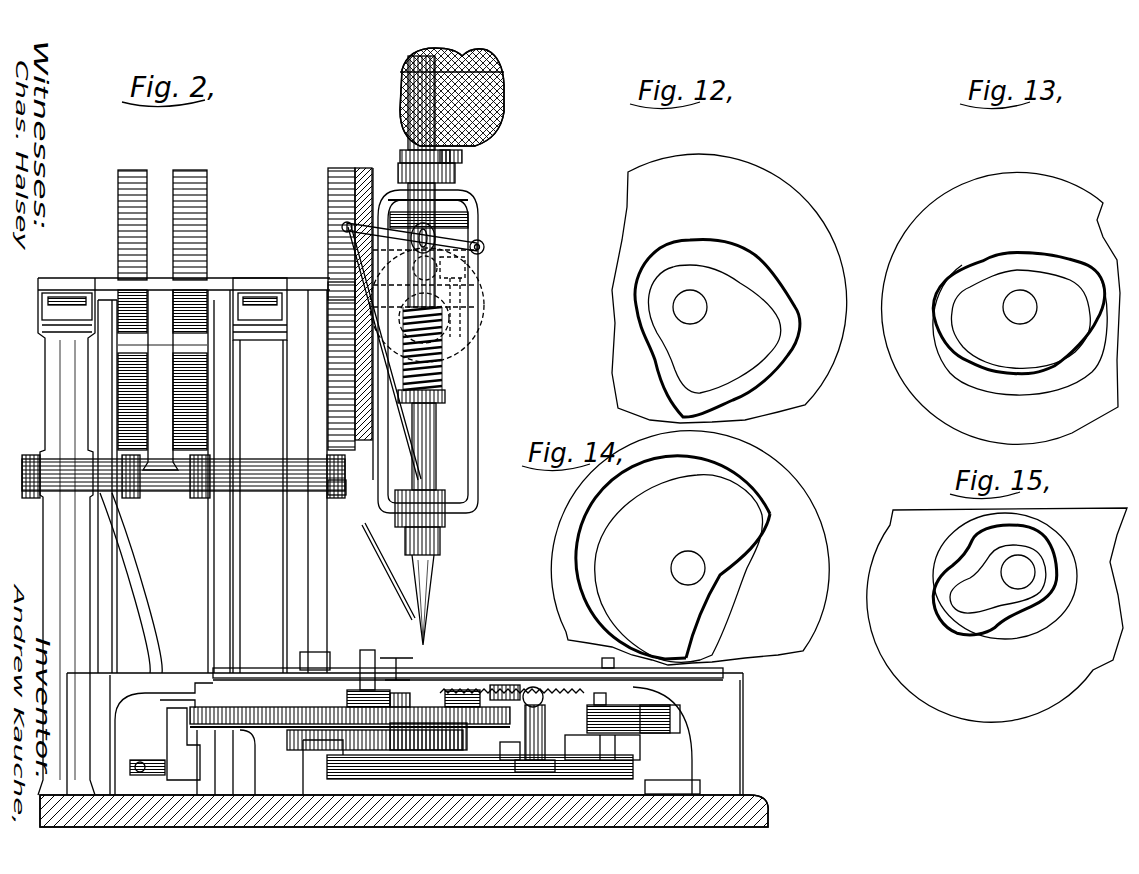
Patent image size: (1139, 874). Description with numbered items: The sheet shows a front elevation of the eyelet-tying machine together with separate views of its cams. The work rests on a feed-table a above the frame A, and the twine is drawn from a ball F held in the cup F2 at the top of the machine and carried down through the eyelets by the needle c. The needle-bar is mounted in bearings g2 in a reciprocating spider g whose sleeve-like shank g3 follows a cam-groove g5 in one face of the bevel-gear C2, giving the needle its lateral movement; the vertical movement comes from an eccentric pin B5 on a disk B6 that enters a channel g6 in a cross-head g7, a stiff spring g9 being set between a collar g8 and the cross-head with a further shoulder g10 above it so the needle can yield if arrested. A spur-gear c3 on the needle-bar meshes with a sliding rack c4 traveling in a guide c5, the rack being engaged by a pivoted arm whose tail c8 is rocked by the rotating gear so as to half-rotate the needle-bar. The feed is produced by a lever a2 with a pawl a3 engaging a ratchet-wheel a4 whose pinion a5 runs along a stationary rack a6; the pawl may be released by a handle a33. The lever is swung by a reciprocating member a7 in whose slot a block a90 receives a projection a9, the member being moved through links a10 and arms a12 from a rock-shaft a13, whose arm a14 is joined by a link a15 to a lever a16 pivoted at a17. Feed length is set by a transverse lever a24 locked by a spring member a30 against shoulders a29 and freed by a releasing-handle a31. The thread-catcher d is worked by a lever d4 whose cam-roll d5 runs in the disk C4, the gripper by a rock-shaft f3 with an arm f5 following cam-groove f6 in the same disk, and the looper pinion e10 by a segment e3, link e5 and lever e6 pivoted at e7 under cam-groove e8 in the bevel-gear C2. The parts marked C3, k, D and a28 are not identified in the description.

In FIG. 2, the frame A is at (767, 805).
In FIG. 2, the thread-catcher d is at (40, 298).
In FIG. 2, the cam C3 is at (133, 176).
In FIG. 2, the disk C4 is at (200, 176).
In FIG. 14, the disk C4 is at (690, 548).
In FIG. 15, the disk C4 is at (997, 615).
In FIG. 2, the bevel-gear C2 is at (374, 200).
In FIG. 12, the bevel-gear C2 is at (729, 288).
In FIG. 13, the bevel-gear C2 is at (1001, 308).
In FIG. 2, the upwardly-projecting arm f5 is at (160, 367).
In FIG. 2, the rock-shaft f3 is at (345, 462).
In FIG. 2, the lever d4 is at (222, 588).
In FIG. 2, the cam-roll d5 is at (210, 293).
In FIG. 2, the lever a16 is at (132, 545).
In FIG. 2, the pivot a17 is at (145, 496).
In FIG. 2, the pivot e7 is at (340, 496).
In FIG. 2, the shank g3 is at (350, 283).
In FIG. 2, the reciprocating spider g is at (478, 440).
In FIG. 2, the bearings g2 is at (460, 197).
In FIG. 2, the shoulder g10 is at (470, 219).
In FIG. 2, the ball F is at (490, 72).
In FIG. 2, the cup F2 is at (488, 90).
In FIG. 2, the guide c5 is at (465, 152).
In FIG. 2, the spur-gear c3 is at (460, 160).
In FIG. 2, the sliding rack c4 is at (458, 172).
In FIG. 2, the lever k is at (344, 226).
In FIG. 2, the eccentric pin B5 is at (485, 248).
In FIG. 2, the channel g6 is at (440, 272).
In FIG. 2, the cross-head g7 is at (466, 285).
In FIG. 2, the disk B6 is at (481, 312).
In FIG. 2, the spring g9 is at (445, 372).
In FIG. 2, the collar g8 is at (447, 397).
In FIG. 2, the tail c8 is at (438, 470).
In FIG. 2, the needle c is at (428, 582).
In FIG. 2, the lever D is at (382, 572).
In FIG. 2, the feed-table a is at (452, 671).
In FIG. 2, the pinion e10 is at (460, 676).
In FIG. 2, the bracket a28 is at (606, 659).
In FIG. 2, the stationary rack a6 is at (265, 706).
In FIG. 2, the ratchet-wheel a4 is at (350, 690).
In FIG. 2, the link e5 is at (245, 745).
In FIG. 2, the segment e3 is at (305, 760).
In FIG. 2, the arm a14 is at (170, 743).
In FIG. 2, the link a15 is at (147, 767).
In FIG. 2, the pawl a3 is at (413, 693).
In FIG. 2, the lever a2 is at (463, 690).
In FIG. 2, the lever a24 is at (505, 690).
In FIG. 2, the spring locking member a30 is at (570, 693).
In FIG. 2, the shoulders a29 is at (536, 687).
In FIG. 2, the projection a9 is at (546, 745).
In FIG. 2, the releasing-handle a31 is at (510, 752).
In FIG. 2, the arms a12 is at (607, 720).
In FIG. 2, the rock-shaft a13 is at (663, 717).
In FIG. 2, the links a10 is at (613, 747).
In FIG. 2, the reciprocating member a7 is at (633, 770).
In FIG. 2, the block a90 is at (667, 787).
In FIG. 2, the handle a33 is at (394, 657).
In FIG. 2, the pinion a5 is at (367, 650).
In FIG. 2, the lever e6 is at (316, 652).
In FIG. 12, the cam-groove g5 is at (728, 267).
In FIG. 13, the cam-groove e8 is at (1046, 261).
In FIG. 14, the cam-groove f6 is at (718, 472).
In FIG. 15, the cam-groove f6 is at (977, 545).